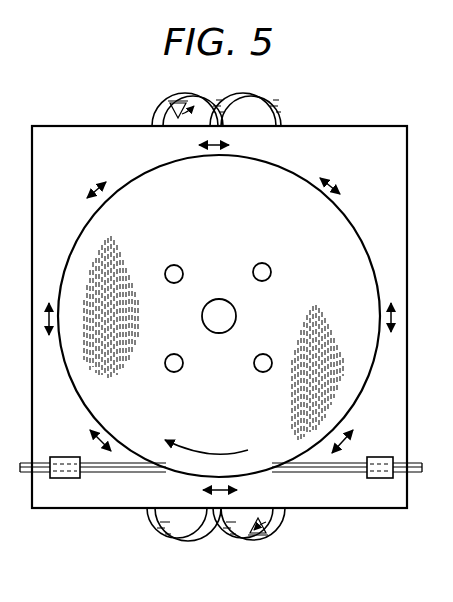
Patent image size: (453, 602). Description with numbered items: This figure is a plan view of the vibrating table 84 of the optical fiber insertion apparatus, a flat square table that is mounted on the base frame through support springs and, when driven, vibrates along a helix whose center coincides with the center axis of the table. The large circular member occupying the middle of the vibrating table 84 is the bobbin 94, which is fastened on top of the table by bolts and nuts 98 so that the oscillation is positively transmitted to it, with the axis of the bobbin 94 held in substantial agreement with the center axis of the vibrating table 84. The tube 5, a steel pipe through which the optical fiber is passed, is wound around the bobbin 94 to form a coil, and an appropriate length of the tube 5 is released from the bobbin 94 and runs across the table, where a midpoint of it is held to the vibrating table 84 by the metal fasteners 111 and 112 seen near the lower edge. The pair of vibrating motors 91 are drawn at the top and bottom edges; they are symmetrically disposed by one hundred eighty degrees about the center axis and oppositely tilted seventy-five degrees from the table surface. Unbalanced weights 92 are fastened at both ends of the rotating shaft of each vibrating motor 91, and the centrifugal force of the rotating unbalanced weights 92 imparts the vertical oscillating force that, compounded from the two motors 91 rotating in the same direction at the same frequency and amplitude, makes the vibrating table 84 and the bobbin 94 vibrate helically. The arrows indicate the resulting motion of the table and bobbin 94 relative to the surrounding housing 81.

The tube 5 is at (103, 470).
The housing frame 81 is at (368, 122).
The vibrating table 84 is at (397, 214).
The vibrating motors 91 is at (271, 106).
The unbalanced weights 92 is at (165, 101).
The bobbin 94 is at (350, 226).
The bolts and nuts 98 is at (271, 278).
The metal fastener 111 is at (382, 457).
The metal fastener 112 is at (59, 457).